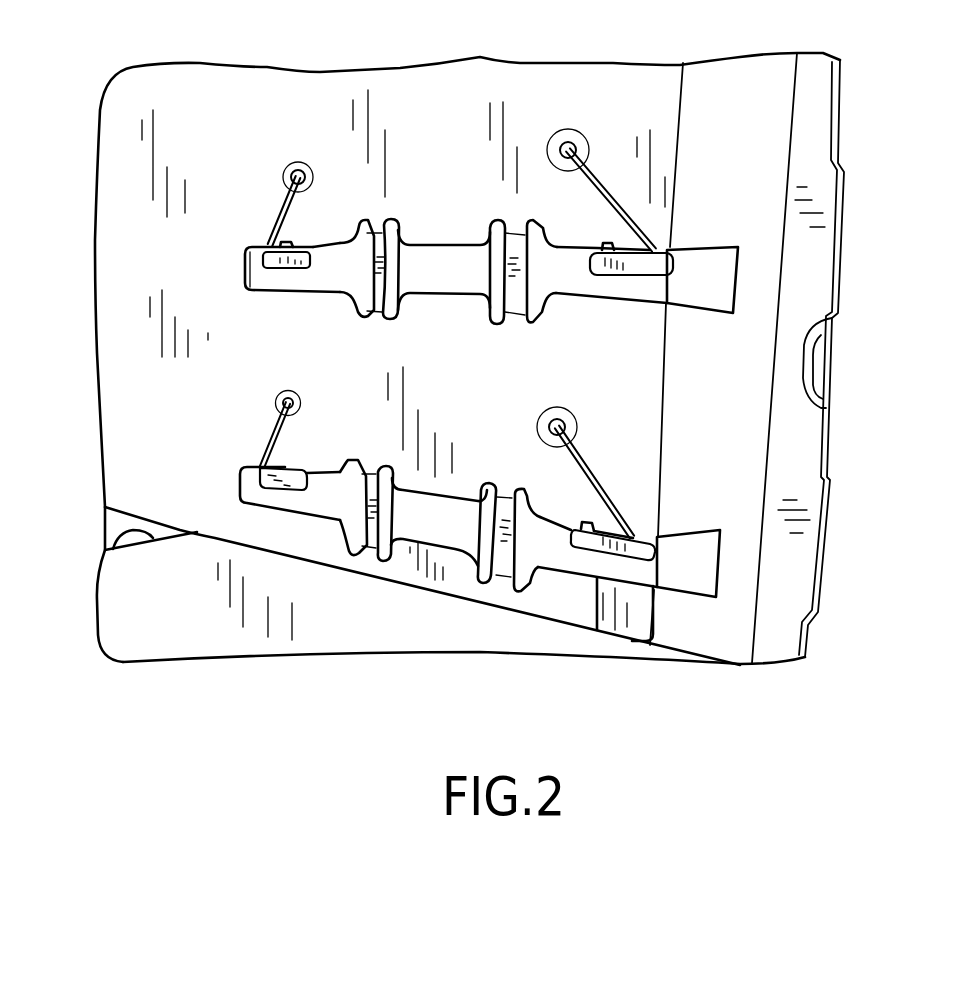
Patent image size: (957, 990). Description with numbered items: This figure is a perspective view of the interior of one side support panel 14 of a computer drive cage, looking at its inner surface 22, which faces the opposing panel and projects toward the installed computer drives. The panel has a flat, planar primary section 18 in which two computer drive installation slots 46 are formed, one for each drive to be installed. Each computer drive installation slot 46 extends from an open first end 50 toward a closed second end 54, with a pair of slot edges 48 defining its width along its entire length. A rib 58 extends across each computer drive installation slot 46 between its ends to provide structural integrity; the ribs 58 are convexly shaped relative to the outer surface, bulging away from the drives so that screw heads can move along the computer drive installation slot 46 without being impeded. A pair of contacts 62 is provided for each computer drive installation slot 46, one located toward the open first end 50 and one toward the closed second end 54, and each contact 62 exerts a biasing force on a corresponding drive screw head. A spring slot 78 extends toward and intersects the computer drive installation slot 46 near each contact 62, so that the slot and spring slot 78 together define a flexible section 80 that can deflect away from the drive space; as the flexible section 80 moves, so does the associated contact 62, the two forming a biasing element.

The side support panel 14 is at (112, 182).
The primary section 18 is at (216, 140).
The inner surface 22 is at (115, 412).
The computer drive installation slot 46 is at (464, 281).
The slot edge 48 is at (432, 243).
The open first end 50 is at (740, 258).
The closed second end 54 is at (247, 266).
The rib 58 is at (523, 270).
The contact 62 is at (278, 257).
The spring slot 78 is at (277, 220).
The flexible section 80 is at (319, 234).